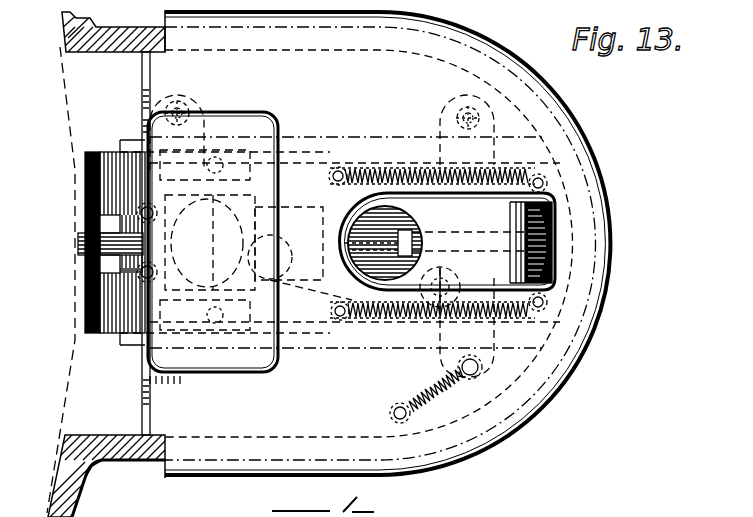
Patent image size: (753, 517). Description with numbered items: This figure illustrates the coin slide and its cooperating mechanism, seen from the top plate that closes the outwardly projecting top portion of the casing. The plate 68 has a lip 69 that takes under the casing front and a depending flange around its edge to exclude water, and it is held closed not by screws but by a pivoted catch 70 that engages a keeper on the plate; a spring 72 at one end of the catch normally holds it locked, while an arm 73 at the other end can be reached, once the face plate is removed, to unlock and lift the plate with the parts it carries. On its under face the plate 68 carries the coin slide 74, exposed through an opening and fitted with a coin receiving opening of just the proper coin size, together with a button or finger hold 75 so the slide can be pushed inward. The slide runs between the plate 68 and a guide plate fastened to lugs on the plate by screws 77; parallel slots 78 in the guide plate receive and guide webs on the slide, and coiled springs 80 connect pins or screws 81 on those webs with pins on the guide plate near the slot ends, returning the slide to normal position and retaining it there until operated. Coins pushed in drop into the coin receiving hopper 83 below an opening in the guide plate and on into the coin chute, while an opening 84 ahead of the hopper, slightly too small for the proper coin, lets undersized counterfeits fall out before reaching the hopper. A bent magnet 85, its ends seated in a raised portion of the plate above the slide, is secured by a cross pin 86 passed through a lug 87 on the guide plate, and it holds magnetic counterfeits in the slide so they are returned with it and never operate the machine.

The plate 68 is at (277, 362).
The lip 69 is at (150, 73).
The pivoted catch 70 is at (314, 291).
The spring 72 is at (442, 345).
The arm 73 is at (284, 257).
The coin slide 74 is at (447, 241).
The button or finger hold 75 is at (520, 258).
The screws 77 is at (470, 106).
The parallel slots 78 is at (297, 160).
The coiled springs 80 is at (406, 164).
The pins or screws 81 is at (344, 164).
The coin receiving hopper 83 is at (167, 278).
The opening 84 is at (241, 240).
The bent magnet 85 is at (85, 160).
The cross pin 86 is at (85, 206).
The lug 87 is at (80, 240).